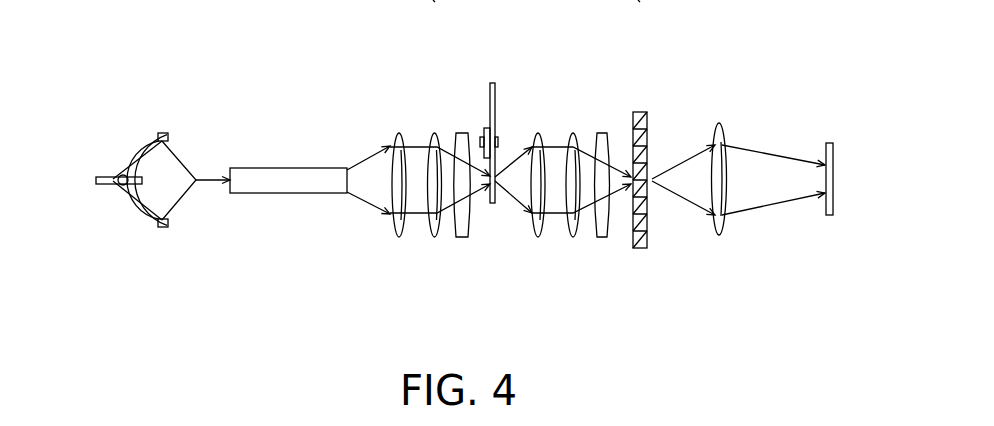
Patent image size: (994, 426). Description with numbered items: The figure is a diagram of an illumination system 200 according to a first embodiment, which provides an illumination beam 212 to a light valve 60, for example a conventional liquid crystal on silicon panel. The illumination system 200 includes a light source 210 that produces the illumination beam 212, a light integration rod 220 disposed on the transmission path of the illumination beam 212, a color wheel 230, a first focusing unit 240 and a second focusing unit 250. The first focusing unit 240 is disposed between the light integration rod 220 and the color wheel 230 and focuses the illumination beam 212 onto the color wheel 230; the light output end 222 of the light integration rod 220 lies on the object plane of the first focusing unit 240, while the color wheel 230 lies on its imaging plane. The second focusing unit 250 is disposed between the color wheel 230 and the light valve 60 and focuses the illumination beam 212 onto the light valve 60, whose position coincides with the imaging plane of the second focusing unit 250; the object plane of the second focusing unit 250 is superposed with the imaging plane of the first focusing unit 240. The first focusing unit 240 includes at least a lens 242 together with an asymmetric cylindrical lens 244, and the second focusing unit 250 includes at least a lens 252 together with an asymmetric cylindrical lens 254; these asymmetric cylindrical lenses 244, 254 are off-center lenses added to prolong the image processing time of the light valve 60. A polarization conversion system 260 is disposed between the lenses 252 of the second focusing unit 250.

The illumination system 200 is at (733, 65).
The light source 210 is at (162, 227).
The illumination beam 212 is at (210, 178).
The light integration rod 220 is at (297, 195).
The light output end 222 is at (350, 192).
The color wheel 230 is at (495, 100).
The first focusing unit 240 is at (473, 291).
The lens 242 is at (399, 237).
The asymmetric cylindrical lens 244 is at (462, 237).
The second focusing unit 250 is at (725, 291).
The lens 252 is at (538, 237).
The asymmetric cylindrical lens 254 is at (602, 237).
The polarization conversion system 260 is at (650, 120).
The light valve 60 is at (828, 217).